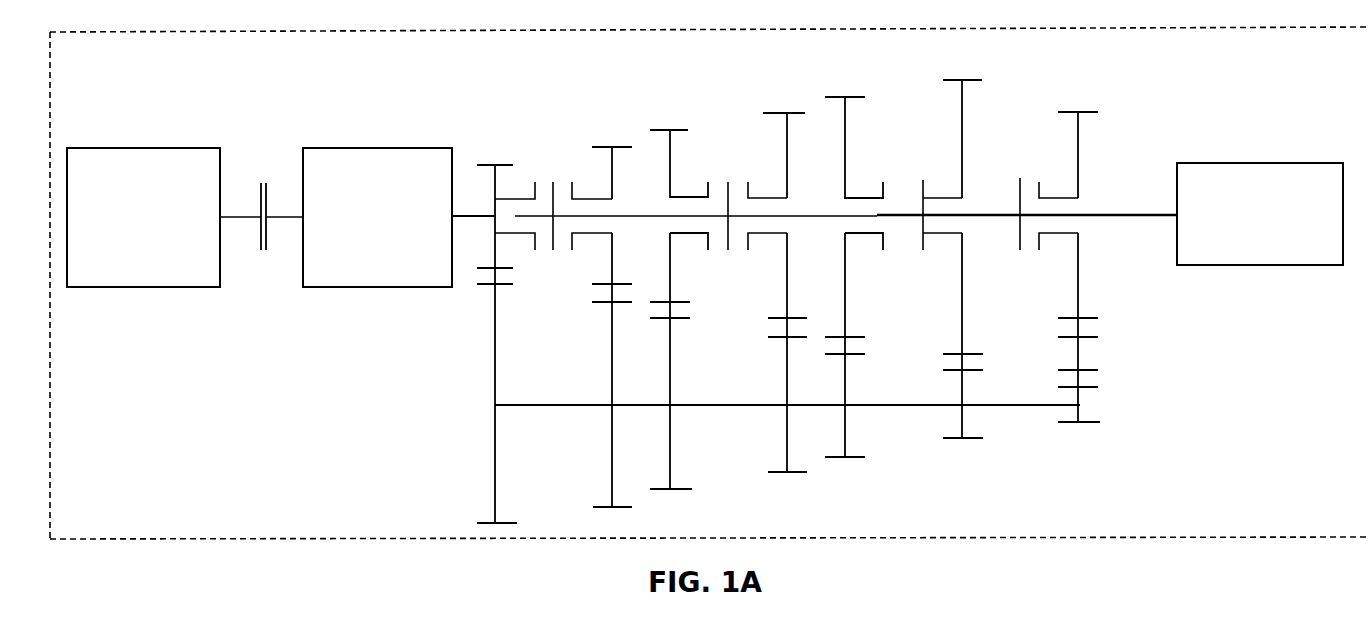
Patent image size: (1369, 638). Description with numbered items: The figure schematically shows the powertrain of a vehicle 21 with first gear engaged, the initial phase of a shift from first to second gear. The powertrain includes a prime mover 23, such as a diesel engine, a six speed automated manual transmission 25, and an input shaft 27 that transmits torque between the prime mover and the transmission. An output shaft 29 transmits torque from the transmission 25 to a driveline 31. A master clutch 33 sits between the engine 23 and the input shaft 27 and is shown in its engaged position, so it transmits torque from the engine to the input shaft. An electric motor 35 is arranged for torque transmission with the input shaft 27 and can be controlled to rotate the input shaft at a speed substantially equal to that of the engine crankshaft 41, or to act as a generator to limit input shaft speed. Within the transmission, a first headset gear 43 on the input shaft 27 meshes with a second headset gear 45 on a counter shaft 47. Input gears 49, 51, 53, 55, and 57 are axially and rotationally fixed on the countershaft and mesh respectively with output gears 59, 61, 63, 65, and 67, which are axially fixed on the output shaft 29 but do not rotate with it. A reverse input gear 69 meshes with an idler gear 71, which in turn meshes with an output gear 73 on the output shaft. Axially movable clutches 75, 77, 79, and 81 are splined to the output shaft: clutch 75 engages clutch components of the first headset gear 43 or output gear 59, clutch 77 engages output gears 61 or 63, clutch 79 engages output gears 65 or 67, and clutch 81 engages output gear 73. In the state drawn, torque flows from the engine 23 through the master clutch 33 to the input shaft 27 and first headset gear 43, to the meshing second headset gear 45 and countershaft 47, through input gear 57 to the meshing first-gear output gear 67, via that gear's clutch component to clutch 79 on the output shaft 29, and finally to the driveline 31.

The vehicle 21 is at (222, 537).
The prime mover 23 is at (108, 287).
The transmission 25 is at (549, 110).
The input shaft 27 is at (281, 215).
The output shaft 29 is at (1137, 213).
The driveline 31 is at (1253, 265).
The master clutch 33 is at (263, 250).
The electric motor 35 is at (382, 148).
The crankshaft 41 is at (244, 215).
The first headset gear 43 is at (513, 163).
The second headset gear 45 is at (495, 438).
The counter shaft 47 is at (553, 405).
The input gear 49 is at (612, 438).
The input gear 51 is at (672, 455).
The input gear 53 is at (787, 370).
The input gear 55 is at (845, 457).
The input gear 57 is at (962, 438).
The output gear 59 is at (592, 147).
The output gear 61 is at (670, 130).
The output gear 63 is at (763, 115).
The output gear 65 is at (845, 147).
The output gear 67 is at (962, 147).
The reverse input gear 69 is at (1080, 422).
The idler gear 71 is at (1080, 347).
The output gear 73 is at (1078, 283).
The clutch 75 is at (552, 250).
The clutch 77 is at (727, 250).
The clutch 79 is at (920, 250).
The clutch 81 is at (1020, 250).